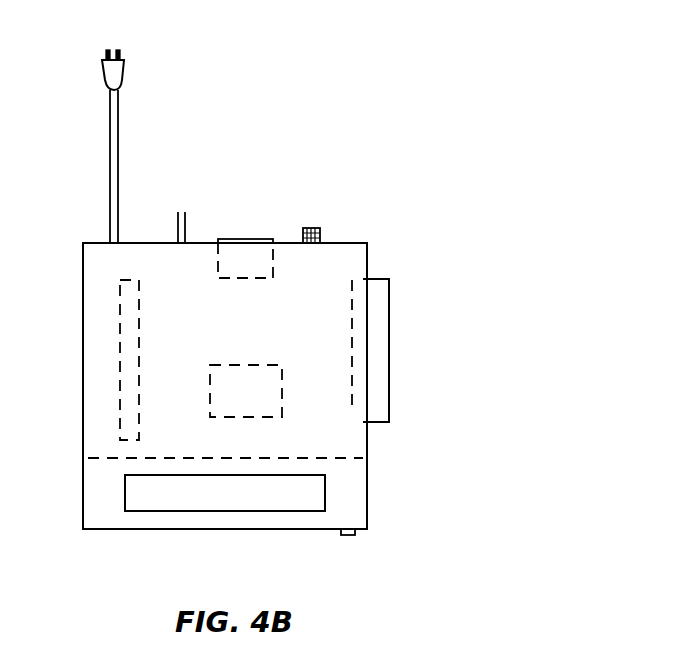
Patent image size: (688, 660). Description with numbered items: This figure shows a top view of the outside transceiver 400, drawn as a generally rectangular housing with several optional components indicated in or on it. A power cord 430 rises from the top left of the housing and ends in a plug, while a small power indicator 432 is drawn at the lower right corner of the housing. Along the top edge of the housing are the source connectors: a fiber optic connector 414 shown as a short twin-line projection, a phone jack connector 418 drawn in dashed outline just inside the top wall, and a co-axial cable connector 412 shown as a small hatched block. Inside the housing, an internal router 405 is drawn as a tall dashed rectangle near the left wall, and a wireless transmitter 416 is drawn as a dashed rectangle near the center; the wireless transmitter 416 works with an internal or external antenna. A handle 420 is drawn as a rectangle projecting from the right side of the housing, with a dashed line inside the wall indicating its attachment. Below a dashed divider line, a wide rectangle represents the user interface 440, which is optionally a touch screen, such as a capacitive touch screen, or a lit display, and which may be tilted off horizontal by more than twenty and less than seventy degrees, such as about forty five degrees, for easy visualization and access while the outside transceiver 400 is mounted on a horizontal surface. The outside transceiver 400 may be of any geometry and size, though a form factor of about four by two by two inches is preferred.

The outside transceiver 400 is at (387, 112).
The power cord with plug 430 is at (110, 157).
The fiber optic connector 414 is at (185, 235).
The phone jack connector 418 is at (253, 278).
The co-axial cable connector 412 is at (315, 227).
The handle 420 is at (380, 278).
The internal router 405 is at (138, 352).
The wireless transmitter 416 is at (253, 362).
The user interface 440 is at (278, 475).
The power indicator 432 is at (347, 535).